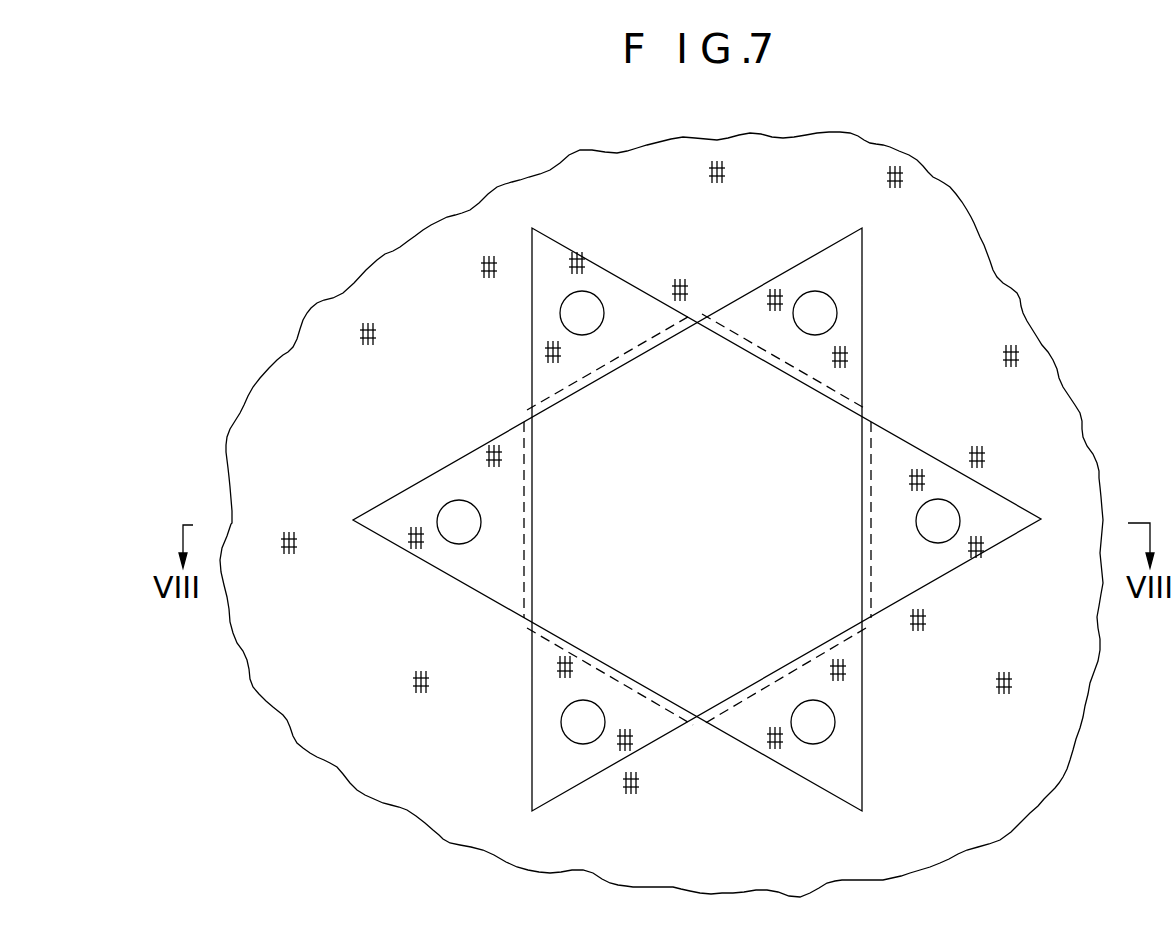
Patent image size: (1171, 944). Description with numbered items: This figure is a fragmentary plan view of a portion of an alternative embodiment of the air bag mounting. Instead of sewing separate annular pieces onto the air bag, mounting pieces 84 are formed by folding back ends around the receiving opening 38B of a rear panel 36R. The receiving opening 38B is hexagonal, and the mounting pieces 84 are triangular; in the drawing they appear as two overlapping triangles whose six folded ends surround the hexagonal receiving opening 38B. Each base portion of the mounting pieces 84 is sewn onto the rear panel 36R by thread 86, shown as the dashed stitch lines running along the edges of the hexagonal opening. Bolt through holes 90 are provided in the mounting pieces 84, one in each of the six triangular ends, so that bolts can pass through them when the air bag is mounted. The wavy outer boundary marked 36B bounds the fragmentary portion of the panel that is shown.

The blue color filter body 36B is at (591, 514).
The rear panel 36R is at (222, 684).
The receiving opening 38B is at (704, 525).
The mounting pieces 84 is at (560, 248).
The thread 86 is at (620, 355).
The bolt through holes 90 is at (592, 300).